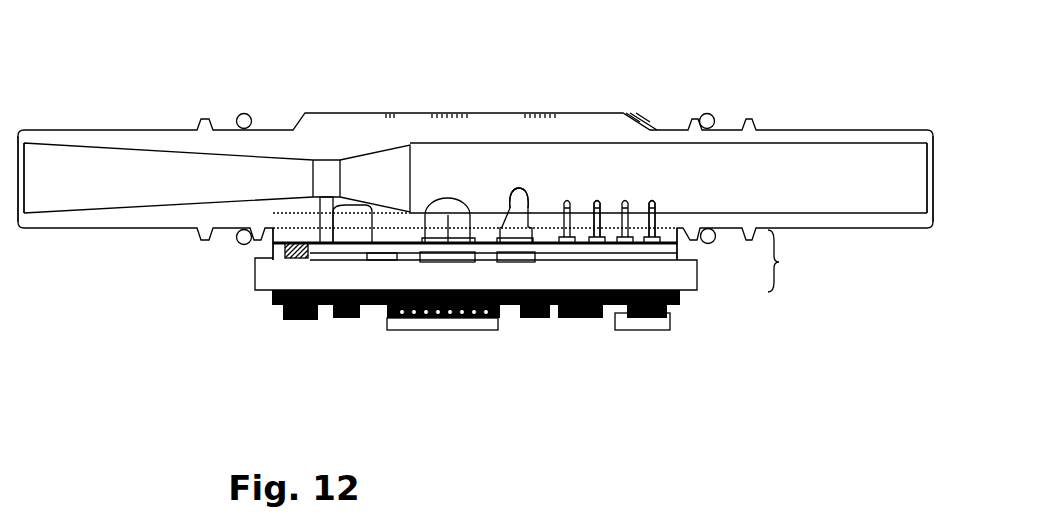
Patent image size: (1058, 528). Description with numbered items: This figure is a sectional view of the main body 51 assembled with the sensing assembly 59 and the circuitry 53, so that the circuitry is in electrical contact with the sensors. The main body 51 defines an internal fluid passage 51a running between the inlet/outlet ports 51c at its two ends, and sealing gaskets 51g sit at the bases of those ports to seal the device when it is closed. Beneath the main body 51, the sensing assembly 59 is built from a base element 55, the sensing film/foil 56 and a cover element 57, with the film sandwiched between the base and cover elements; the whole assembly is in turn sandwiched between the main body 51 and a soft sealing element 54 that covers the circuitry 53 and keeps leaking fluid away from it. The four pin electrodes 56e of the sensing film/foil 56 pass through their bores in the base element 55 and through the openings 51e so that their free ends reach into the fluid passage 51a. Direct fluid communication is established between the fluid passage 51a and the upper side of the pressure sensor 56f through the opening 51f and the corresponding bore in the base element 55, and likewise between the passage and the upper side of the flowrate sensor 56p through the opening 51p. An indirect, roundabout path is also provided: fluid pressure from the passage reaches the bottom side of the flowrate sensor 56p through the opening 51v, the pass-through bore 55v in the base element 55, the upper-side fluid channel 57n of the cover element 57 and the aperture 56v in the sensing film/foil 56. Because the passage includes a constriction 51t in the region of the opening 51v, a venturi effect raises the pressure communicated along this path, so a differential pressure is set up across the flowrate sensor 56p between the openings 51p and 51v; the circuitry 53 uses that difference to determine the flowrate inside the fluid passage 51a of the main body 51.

The main body 51 is at (822, 203).
The internal fluid passage 51a is at (768, 178).
The inlet/outlet ports 51c is at (72, 131).
The openings for the pin electrodes 51e is at (657, 203).
The opening for the pressure sensor 51f is at (518, 207).
The sealing gaskets 51g is at (245, 113).
The opening for the flowrate sensor 51p is at (435, 220).
The constriction 51t is at (318, 183).
The opening for indirect flowrate communication 51v is at (322, 221).
The circuitry 53 is at (680, 306).
The sealing element 54 is at (255, 272).
The base element 55 is at (262, 233).
The pass-through bore 55v is at (320, 230).
The sensing film/foil 56 is at (680, 240).
The pin electrodes 56e is at (602, 198).
The pressure sensor 56f is at (493, 220).
The flowrate sensor 56p is at (450, 242).
The aperture 56v is at (330, 240).
The cover element 57 is at (273, 238).
The fluid channel 57n is at (372, 260).
The sensing assembly 59 is at (791, 261).